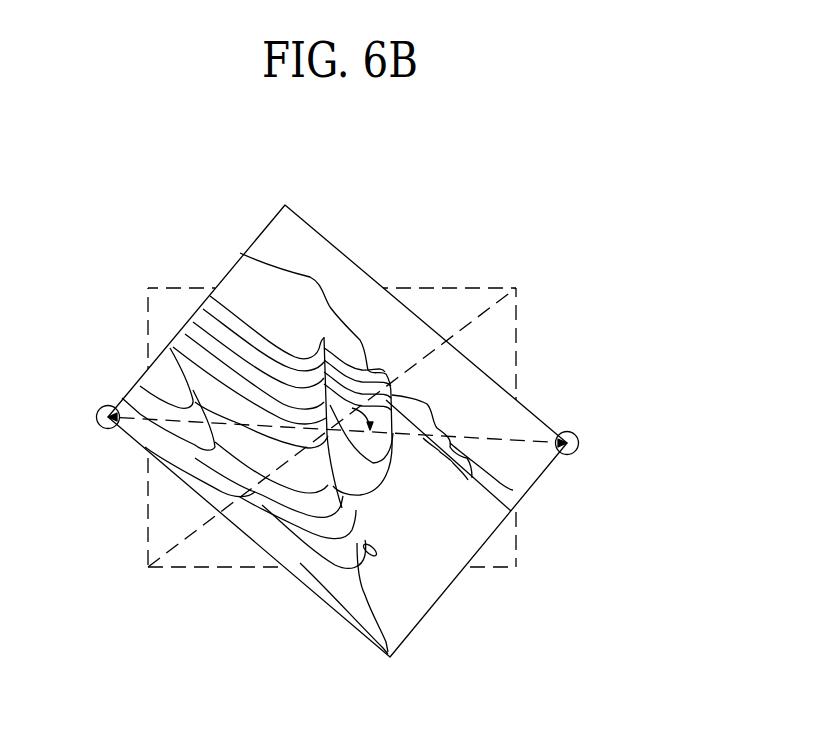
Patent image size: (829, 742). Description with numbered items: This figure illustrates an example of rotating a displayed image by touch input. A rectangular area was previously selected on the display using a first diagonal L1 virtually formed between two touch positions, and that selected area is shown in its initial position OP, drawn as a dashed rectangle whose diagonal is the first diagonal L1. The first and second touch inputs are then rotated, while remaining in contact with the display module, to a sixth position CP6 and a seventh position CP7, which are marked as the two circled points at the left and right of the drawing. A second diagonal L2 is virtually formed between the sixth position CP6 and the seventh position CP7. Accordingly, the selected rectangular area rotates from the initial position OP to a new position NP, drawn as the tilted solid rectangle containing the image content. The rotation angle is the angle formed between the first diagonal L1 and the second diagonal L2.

The initial position OP is at (166, 271).
The new position NP is at (367, 252).
The first diagonal L1 is at (472, 324).
The second diagonal L2 is at (522, 443).
The sixth position CP6 is at (99, 445).
The seventh position CP7 is at (585, 429).